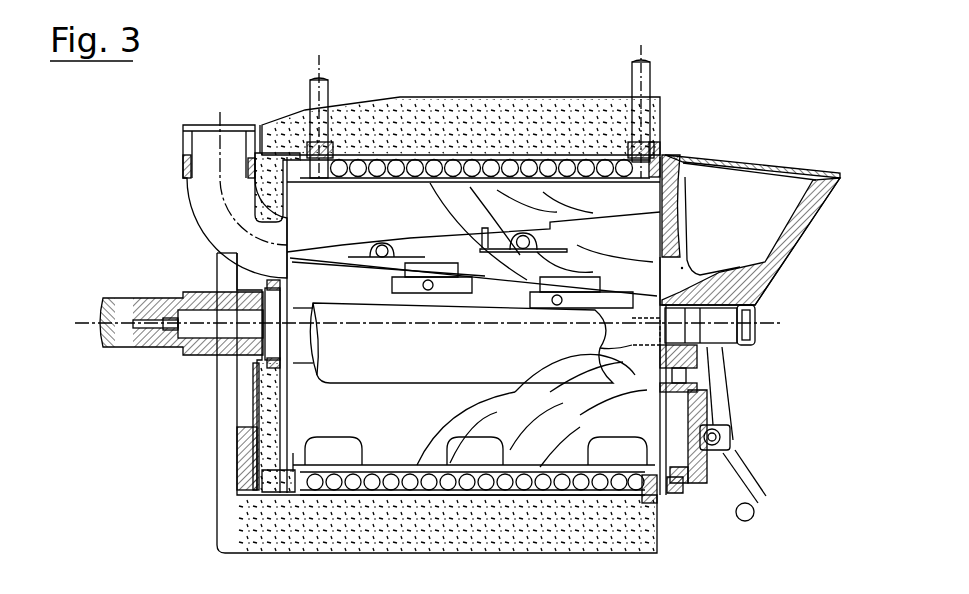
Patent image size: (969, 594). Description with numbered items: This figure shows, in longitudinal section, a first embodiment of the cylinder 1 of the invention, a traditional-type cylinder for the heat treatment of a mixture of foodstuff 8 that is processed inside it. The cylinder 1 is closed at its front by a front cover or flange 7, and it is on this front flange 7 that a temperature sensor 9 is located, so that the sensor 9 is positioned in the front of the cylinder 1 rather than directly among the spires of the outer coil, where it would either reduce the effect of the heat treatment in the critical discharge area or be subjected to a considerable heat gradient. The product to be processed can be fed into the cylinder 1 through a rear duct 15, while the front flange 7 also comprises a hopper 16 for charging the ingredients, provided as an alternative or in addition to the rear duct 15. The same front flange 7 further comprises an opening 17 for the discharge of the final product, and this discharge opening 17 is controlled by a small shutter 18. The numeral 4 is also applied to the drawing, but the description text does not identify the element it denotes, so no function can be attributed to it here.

The cylinder 1 is at (718, 91).
The ball bearing guide rails 4 is at (600, 465).
The front cover or flange 7 is at (678, 455).
The mixture of foodstuff 8 is at (545, 392).
The temperature sensor 9 is at (692, 368).
The rear duct 15 is at (222, 215).
The hopper 16 is at (740, 215).
The opening for the discharge 17 is at (700, 463).
The small shutter 18 is at (702, 442).